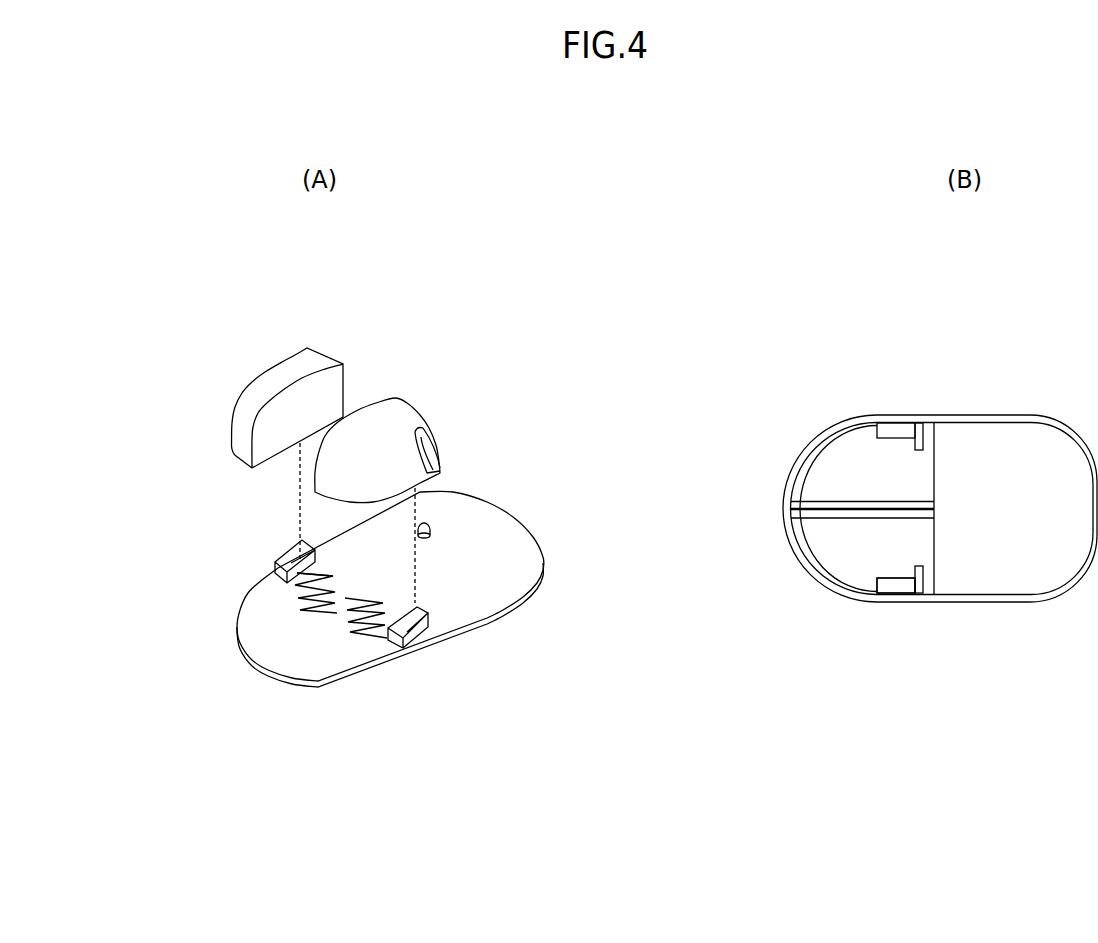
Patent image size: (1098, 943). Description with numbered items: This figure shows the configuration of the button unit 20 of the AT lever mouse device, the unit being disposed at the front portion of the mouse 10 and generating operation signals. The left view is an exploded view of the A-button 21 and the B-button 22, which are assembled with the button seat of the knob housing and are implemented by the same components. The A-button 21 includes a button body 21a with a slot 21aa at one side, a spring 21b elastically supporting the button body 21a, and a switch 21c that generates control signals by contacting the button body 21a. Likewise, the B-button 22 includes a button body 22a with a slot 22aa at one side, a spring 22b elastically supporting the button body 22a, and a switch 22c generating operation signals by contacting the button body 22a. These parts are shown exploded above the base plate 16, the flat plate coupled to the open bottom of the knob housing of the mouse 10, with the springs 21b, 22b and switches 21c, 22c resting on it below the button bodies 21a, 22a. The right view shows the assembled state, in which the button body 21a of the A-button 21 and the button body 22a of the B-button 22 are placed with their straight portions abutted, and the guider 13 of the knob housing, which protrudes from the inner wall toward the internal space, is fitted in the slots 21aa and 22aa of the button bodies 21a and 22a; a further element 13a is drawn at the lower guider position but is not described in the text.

The mouse 10 is at (1012, 414).
The guider 13 is at (918, 436).
The lower holder 13a is at (920, 582).
The base plate 16 is at (324, 657).
The button unit 20 is at (393, 349).
The A-button 21 is at (625, 357).
The button body 21a is at (387, 462).
The slot 21aa is at (430, 428).
The spring 21b is at (370, 602).
The switch 21c is at (428, 613).
The B-button 22 is at (145, 545).
The button body 22a is at (248, 447).
The slot 22aa is at (922, 568).
The spring 22b is at (299, 597).
The switch 22c is at (276, 560).